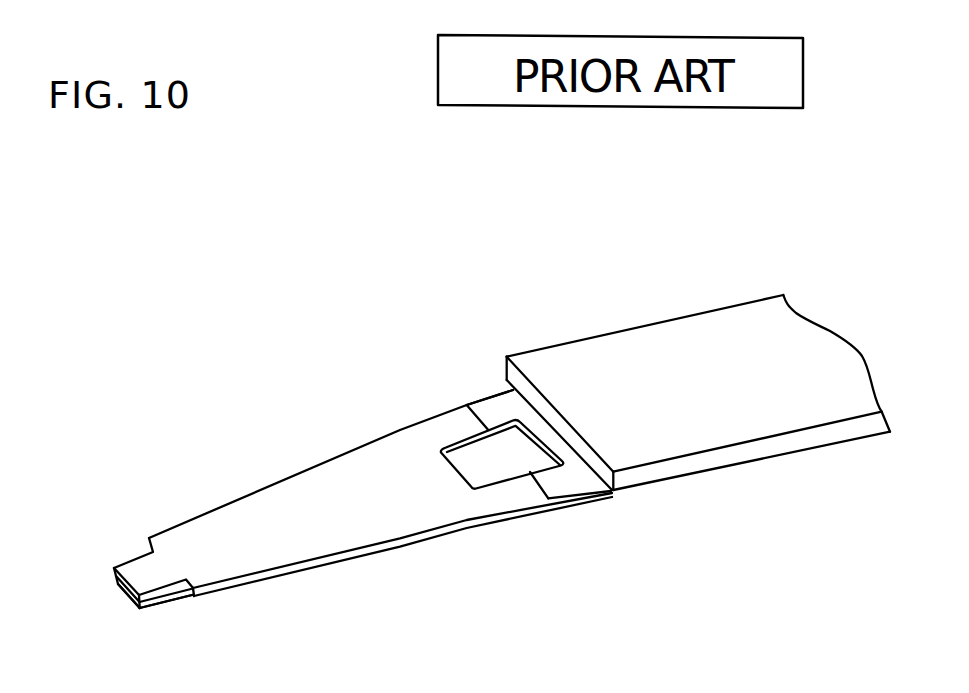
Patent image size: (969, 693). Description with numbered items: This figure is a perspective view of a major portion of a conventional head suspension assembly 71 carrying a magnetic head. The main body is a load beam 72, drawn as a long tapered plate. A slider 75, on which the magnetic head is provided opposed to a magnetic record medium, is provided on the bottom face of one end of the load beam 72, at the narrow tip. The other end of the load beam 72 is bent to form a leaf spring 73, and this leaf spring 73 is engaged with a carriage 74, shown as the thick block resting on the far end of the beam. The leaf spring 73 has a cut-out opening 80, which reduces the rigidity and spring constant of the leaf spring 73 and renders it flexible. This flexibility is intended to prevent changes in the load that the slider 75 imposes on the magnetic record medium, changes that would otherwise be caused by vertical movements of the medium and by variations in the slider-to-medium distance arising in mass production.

The head suspension assembly 71 is at (212, 294).
The load beam 72 is at (295, 493).
The leaf spring 73 is at (570, 480).
The carriage 74 is at (655, 345).
The slider 75 is at (143, 610).
The cut-out opening 80 is at (492, 455).